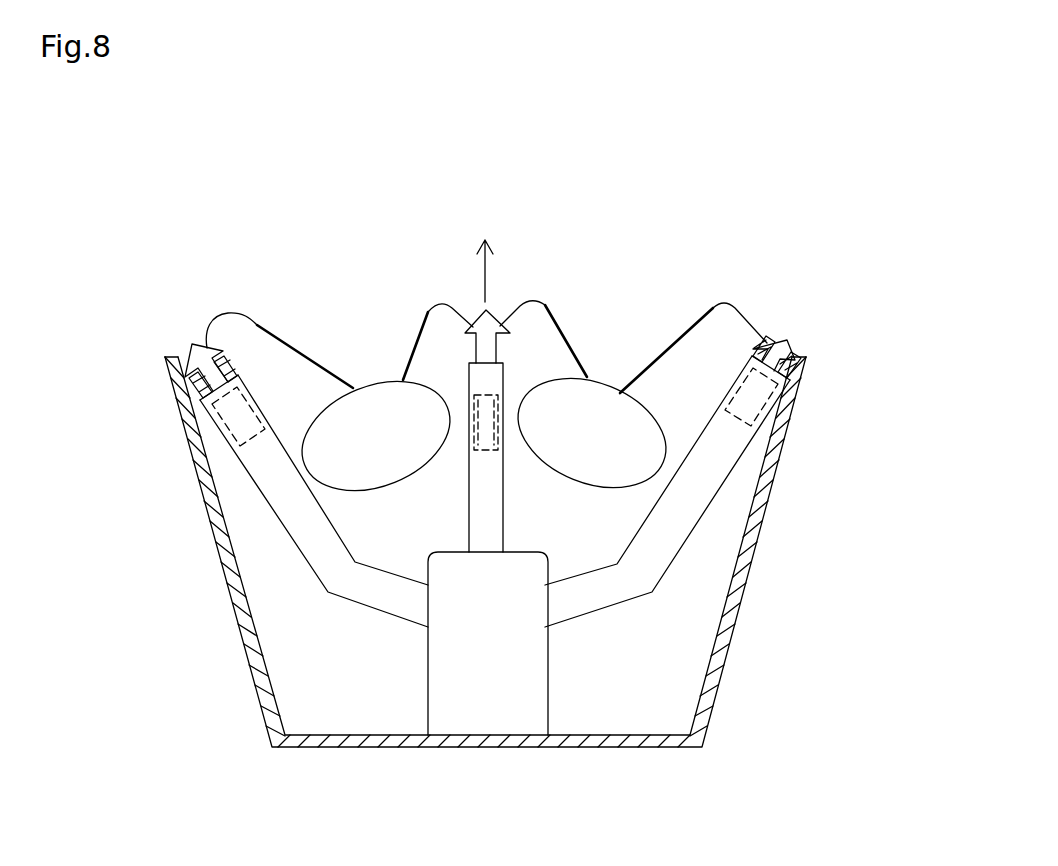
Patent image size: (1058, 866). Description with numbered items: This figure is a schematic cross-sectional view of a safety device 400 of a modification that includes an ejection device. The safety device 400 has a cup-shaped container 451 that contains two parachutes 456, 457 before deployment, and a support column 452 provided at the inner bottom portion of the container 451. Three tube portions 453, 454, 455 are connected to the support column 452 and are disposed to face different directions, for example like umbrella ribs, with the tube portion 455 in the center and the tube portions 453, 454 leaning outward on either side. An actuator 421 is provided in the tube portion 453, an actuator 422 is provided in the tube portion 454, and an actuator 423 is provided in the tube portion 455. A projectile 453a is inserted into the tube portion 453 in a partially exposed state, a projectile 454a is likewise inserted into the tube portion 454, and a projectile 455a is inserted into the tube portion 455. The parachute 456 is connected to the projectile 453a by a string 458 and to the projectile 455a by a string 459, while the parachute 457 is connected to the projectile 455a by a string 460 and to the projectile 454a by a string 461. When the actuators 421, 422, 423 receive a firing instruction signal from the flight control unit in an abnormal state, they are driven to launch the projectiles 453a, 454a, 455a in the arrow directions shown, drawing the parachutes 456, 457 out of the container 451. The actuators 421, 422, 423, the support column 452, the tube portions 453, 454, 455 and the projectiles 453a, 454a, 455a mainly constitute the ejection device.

The safety device 400 is at (513, 144).
The actuator 421 is at (240, 427).
The actuator 422 is at (748, 441).
The actuator 423 is at (487, 455).
The cup-shaped container 451 is at (400, 747).
The support column 452 is at (527, 722).
The tube portion 453 is at (307, 517).
The projectile 453a is at (190, 341).
The tube portion 454 is at (667, 535).
The projectile 454a is at (790, 345).
The tube portion 455 is at (488, 388).
The projectile 455a is at (478, 313).
The parachute 456 is at (362, 420).
The parachute 457 is at (610, 416).
The string 458 is at (272, 328).
The string 459 is at (420, 313).
The string 460 is at (520, 300).
The string 461 is at (672, 328).